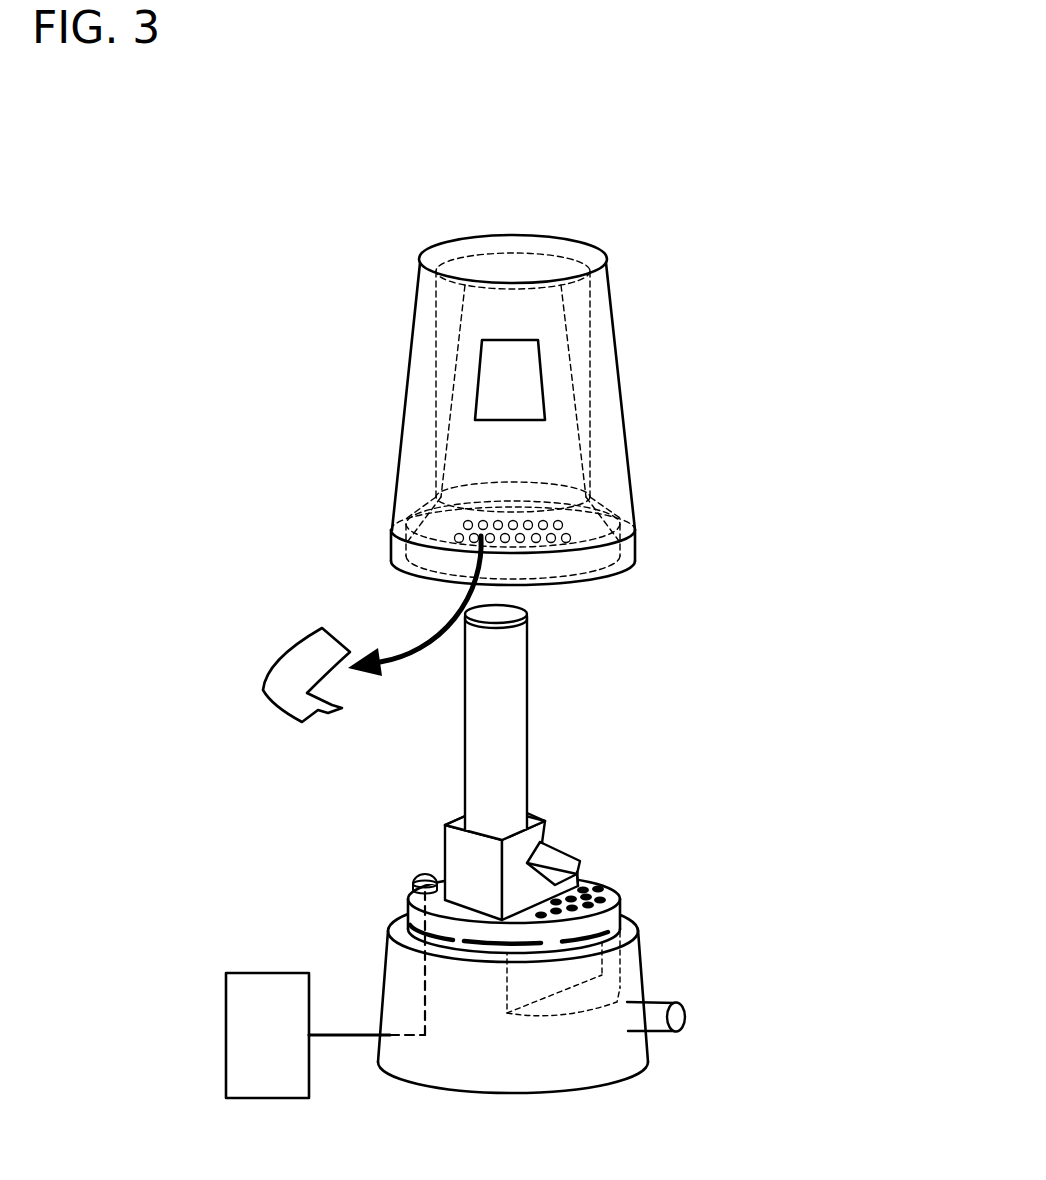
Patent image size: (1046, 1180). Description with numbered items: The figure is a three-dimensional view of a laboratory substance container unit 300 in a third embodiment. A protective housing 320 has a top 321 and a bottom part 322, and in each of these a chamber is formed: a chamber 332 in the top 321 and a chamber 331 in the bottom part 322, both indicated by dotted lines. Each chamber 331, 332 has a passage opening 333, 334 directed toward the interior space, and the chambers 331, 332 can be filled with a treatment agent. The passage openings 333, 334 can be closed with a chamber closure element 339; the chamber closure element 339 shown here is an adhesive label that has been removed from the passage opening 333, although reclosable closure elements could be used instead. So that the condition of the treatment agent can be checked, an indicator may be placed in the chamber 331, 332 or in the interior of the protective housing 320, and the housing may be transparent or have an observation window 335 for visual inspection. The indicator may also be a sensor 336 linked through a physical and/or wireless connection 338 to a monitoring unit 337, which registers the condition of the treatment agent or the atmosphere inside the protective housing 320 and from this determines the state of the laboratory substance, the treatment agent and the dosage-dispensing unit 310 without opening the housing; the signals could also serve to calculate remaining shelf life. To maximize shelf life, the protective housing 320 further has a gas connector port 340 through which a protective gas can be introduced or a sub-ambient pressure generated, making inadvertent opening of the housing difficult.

The laboratory substance container unit 300 is at (340, 239).
The dosage-dispensing unit 310 is at (500, 740).
The protective housing 320 is at (628, 596).
The top 321 is at (603, 318).
The bottom part 322 is at (533, 1072).
The chamber 331 is at (575, 975).
The chamber 332 is at (525, 462).
The passage opening 333 is at (580, 532).
The passage opening 334 is at (605, 898).
The observation window 335 is at (513, 388).
The sensor 336 is at (408, 883).
The monitoring unit 337 is at (267, 1035).
The connection 338 is at (343, 1037).
The chamber closure element 339 is at (302, 667).
The gas connector port 340 is at (650, 1015).